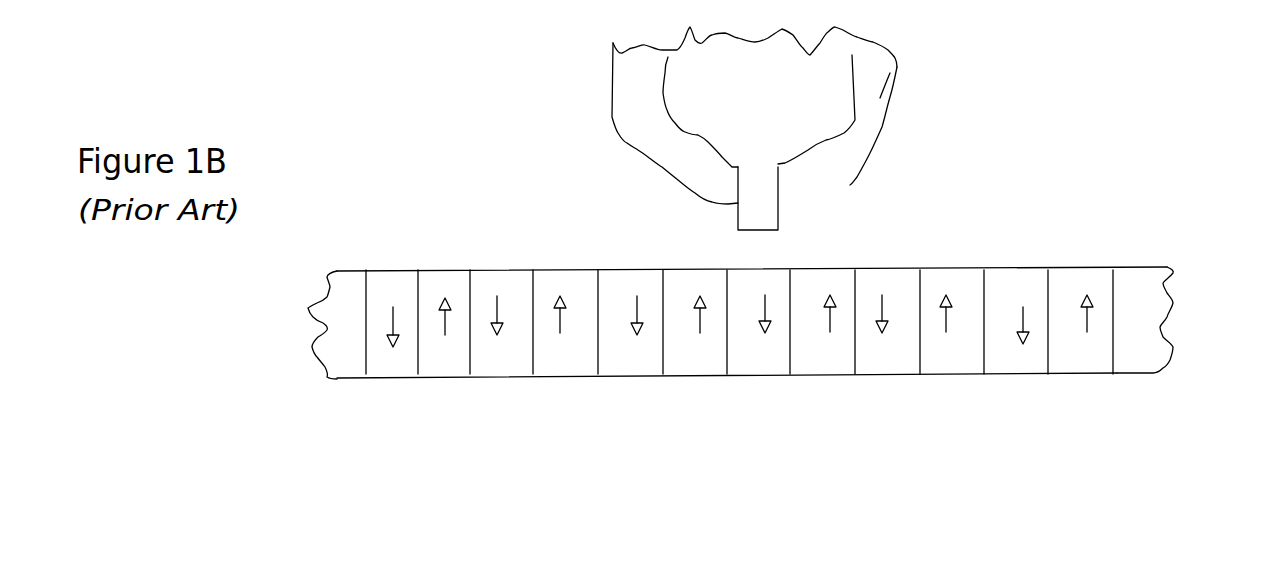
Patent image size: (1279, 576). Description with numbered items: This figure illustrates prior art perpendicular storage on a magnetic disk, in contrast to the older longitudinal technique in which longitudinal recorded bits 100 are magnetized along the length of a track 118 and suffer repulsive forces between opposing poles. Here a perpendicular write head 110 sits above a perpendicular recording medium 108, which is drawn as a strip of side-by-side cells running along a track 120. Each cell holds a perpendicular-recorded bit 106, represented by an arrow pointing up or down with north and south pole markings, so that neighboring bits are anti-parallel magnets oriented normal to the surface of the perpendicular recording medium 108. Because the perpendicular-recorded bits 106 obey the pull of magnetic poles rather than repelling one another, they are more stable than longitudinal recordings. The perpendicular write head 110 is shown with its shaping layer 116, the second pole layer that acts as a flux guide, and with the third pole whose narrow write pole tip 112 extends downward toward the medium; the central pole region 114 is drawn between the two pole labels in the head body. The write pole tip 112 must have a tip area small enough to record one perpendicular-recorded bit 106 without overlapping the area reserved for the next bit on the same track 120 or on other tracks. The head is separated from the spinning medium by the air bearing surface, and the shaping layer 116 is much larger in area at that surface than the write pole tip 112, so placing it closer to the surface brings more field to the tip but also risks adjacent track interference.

The longitudinal recorded bits 100 is at (678, 104).
The perpendicular-recorded bits 106 is at (947, 259).
The perpendicular recording medium 108 is at (1128, 410).
The perpendicular write head 110 is at (857, 120).
The write pole tip 112 is at (762, 200).
The write pole 114 is at (772, 103).
The shaping layer 116 is at (897, 67).
The track 118 is at (750, 248).
The track 120 is at (305, 308).